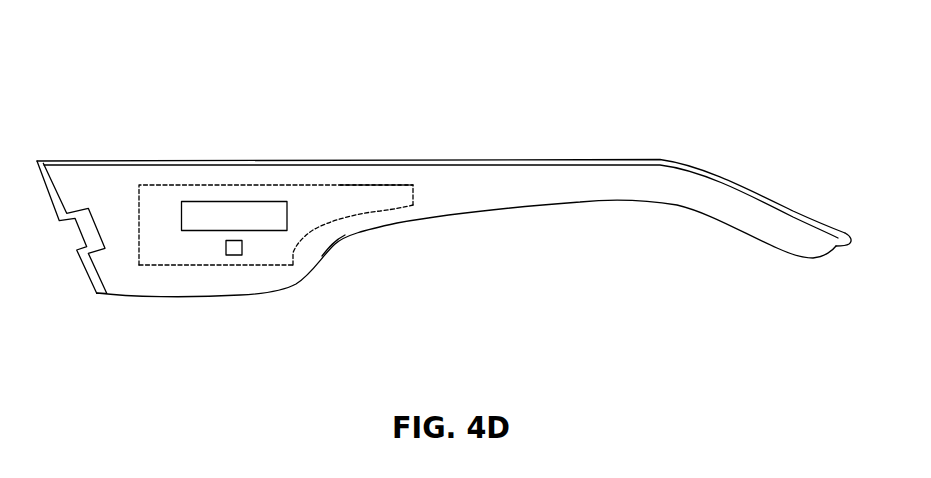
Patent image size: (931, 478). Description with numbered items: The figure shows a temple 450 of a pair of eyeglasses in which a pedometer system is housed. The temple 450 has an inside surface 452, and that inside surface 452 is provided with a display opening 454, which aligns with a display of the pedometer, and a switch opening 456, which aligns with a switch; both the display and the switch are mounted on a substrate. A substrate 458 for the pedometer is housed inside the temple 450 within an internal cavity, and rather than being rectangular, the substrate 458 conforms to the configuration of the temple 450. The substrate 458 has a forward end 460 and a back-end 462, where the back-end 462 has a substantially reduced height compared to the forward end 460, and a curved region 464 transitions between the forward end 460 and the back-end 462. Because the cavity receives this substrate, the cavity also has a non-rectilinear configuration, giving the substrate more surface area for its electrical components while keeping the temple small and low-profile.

The temple 450 is at (533, 213).
The inside surface 452 is at (127, 277).
The display opening 454 is at (231, 217).
The switch opening 456 is at (242, 249).
The substrate 458 is at (352, 200).
The forward end 460 is at (139, 207).
The back-end 462 is at (414, 201).
The curved region 464 is at (340, 222).